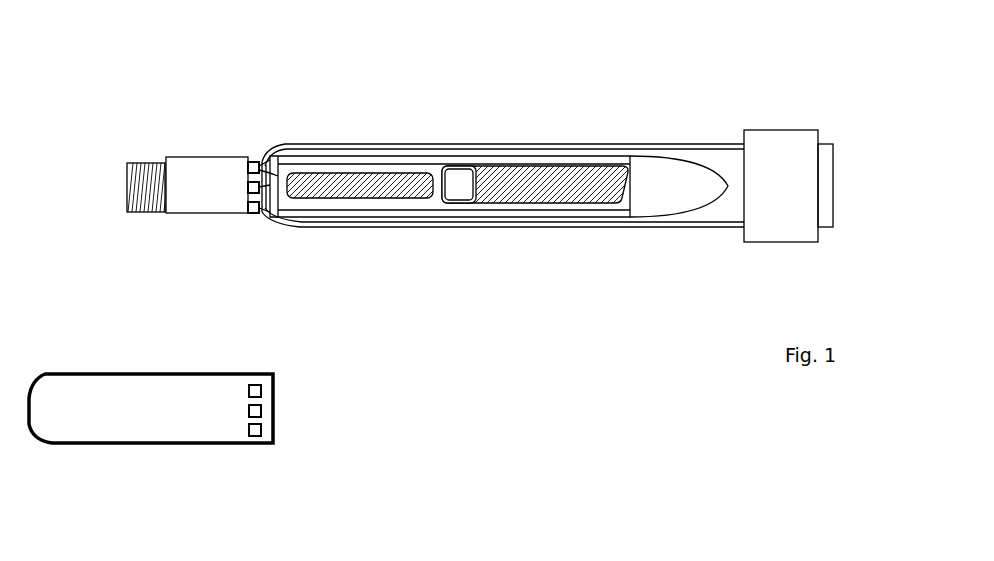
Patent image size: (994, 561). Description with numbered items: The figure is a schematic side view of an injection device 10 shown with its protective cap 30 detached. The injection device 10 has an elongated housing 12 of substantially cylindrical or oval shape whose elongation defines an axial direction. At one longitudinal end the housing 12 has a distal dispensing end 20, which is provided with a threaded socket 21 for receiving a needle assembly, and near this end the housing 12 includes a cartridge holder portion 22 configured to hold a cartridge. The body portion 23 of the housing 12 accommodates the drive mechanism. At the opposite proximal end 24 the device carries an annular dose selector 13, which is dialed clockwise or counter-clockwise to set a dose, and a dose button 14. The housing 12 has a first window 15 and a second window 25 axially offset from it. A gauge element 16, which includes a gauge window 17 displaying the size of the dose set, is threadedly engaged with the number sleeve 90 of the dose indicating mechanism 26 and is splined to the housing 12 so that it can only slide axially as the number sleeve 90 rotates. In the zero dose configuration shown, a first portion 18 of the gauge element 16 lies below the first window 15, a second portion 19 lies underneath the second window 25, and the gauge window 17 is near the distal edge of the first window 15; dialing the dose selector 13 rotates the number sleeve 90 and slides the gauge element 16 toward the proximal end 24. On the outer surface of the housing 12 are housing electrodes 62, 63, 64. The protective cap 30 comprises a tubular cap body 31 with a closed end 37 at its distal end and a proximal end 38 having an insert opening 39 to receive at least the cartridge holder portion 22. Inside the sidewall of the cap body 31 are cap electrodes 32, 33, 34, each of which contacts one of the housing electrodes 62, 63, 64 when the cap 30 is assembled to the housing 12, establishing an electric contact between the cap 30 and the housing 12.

The injection device 10 is at (560, 80).
The housing 12 is at (689, 143).
The dose selector 13 is at (780, 130).
The dose button 14 is at (834, 186).
The first window 15 is at (588, 162).
The gauge element 16 is at (402, 199).
The gauge window 17 is at (457, 164).
The first portion 18 is at (547, 182).
The second portion 19 is at (377, 176).
The dispensing end 20 is at (108, 182).
The threaded socket 21 is at (155, 163).
The cartridge holder portion 22 is at (197, 157).
The body portion 23 is at (693, 217).
The proximal end 24 is at (850, 146).
The second window 25 is at (285, 176).
The dose indicating mechanism 26 is at (580, 270).
The protective cap 30 is at (229, 456).
The cap body 31 is at (208, 446).
The cap electrode 32 is at (262, 391).
The cap electrode 33 is at (262, 411).
The cap electrode 34 is at (262, 430).
The closed end 37 is at (46, 454).
The proximal end 38 is at (268, 458).
The insert opening 39 is at (342, 408).
The housing electrode 62 is at (249, 162).
The housing electrode 63 is at (248, 188).
The housing electrode 64 is at (254, 213).
The number sleeve 90 is at (470, 203).